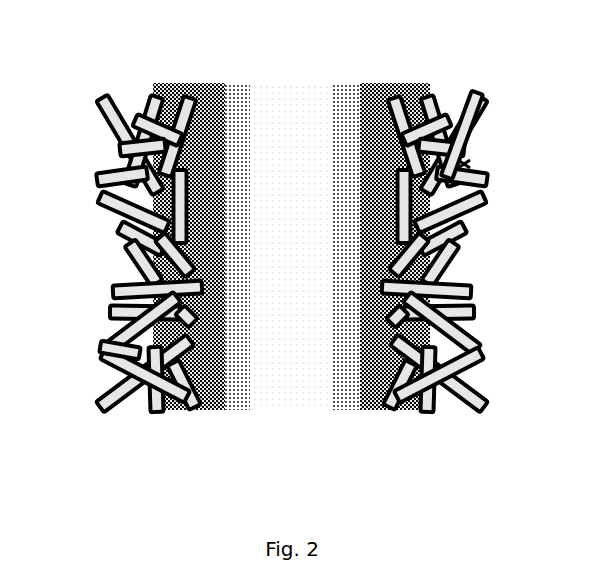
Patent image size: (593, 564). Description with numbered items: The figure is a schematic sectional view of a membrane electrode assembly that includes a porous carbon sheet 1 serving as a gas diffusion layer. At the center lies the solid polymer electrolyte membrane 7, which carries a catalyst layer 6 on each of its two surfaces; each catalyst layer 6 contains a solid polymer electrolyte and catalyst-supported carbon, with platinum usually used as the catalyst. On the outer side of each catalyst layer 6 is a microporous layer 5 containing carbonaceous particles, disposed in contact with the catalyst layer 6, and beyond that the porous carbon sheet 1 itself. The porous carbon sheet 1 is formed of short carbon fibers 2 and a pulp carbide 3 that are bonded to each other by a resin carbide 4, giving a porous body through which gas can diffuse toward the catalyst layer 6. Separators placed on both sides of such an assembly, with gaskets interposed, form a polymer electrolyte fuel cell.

The porous carbon sheet 1 is at (105, 245).
The short carbon fiber 2 is at (468, 100).
The pulp carbide 3 is at (468, 164).
The resin carbide 4 is at (105, 352).
The microporous layer 5 is at (212, 378).
The catalyst layer 6 is at (237, 390).
The electrolyte membrane 7 is at (288, 116).